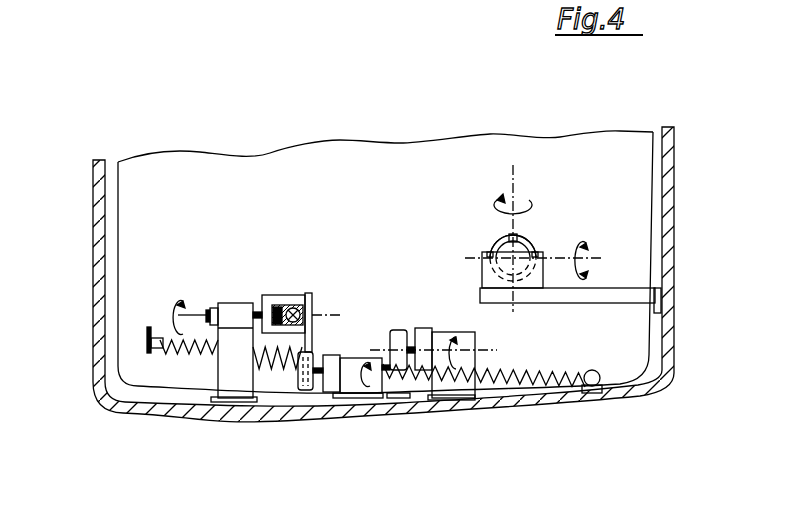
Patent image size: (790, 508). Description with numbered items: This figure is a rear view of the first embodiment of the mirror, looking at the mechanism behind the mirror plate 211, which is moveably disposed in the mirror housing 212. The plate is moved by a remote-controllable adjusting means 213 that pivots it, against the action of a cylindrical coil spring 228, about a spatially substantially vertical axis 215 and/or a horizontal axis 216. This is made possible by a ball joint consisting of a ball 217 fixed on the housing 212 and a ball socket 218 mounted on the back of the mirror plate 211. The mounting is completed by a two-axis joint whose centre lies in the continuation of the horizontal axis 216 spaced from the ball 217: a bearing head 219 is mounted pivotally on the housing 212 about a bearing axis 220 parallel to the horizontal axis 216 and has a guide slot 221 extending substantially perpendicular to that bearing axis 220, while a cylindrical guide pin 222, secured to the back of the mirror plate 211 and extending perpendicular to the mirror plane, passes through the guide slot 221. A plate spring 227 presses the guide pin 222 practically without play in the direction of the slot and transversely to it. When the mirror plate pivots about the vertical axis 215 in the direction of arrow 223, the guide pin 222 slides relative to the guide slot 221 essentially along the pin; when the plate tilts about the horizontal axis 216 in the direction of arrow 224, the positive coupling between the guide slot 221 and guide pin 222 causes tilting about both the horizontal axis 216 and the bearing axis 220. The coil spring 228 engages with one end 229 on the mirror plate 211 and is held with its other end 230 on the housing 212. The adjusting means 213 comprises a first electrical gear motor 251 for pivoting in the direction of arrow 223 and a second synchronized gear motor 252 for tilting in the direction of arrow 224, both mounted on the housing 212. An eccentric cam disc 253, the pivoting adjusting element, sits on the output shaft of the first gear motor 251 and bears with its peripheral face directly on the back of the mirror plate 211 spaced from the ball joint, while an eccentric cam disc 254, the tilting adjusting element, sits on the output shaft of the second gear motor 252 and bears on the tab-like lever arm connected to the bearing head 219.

The mirror plate 211 is at (642, 181).
The mirror housing 212 is at (676, 165).
The remote-controllable adjusting means 213 is at (367, 258).
The vertical axis 215 is at (513, 182).
The horizontal axis 216 is at (472, 258).
The ball 217 is at (523, 235).
The ball socket 218 is at (544, 255).
The bearing head 219 is at (267, 295).
The bearing axis 220 is at (195, 315).
The guide slot 221 is at (282, 295).
The cylindrical guide pin 222 is at (307, 293).
The arrow (pivoting direction) 223 is at (495, 206).
The arrow (tilting direction) 224 is at (583, 240).
The plate spring 227 is at (291, 295).
The cylindrical coil spring 228 is at (518, 381).
The spring end (on mirror plate) 229 is at (156, 353).
The spring end (on housing) 230 is at (596, 393).
The first electrical gear motor 251 is at (440, 375).
The second synchronized gear motor 252 is at (380, 394).
The eccentric cam disc (pivoting adjusting element) 253 is at (397, 370).
The eccentric cam disc (tilting adjusting element) 254 is at (306, 390).